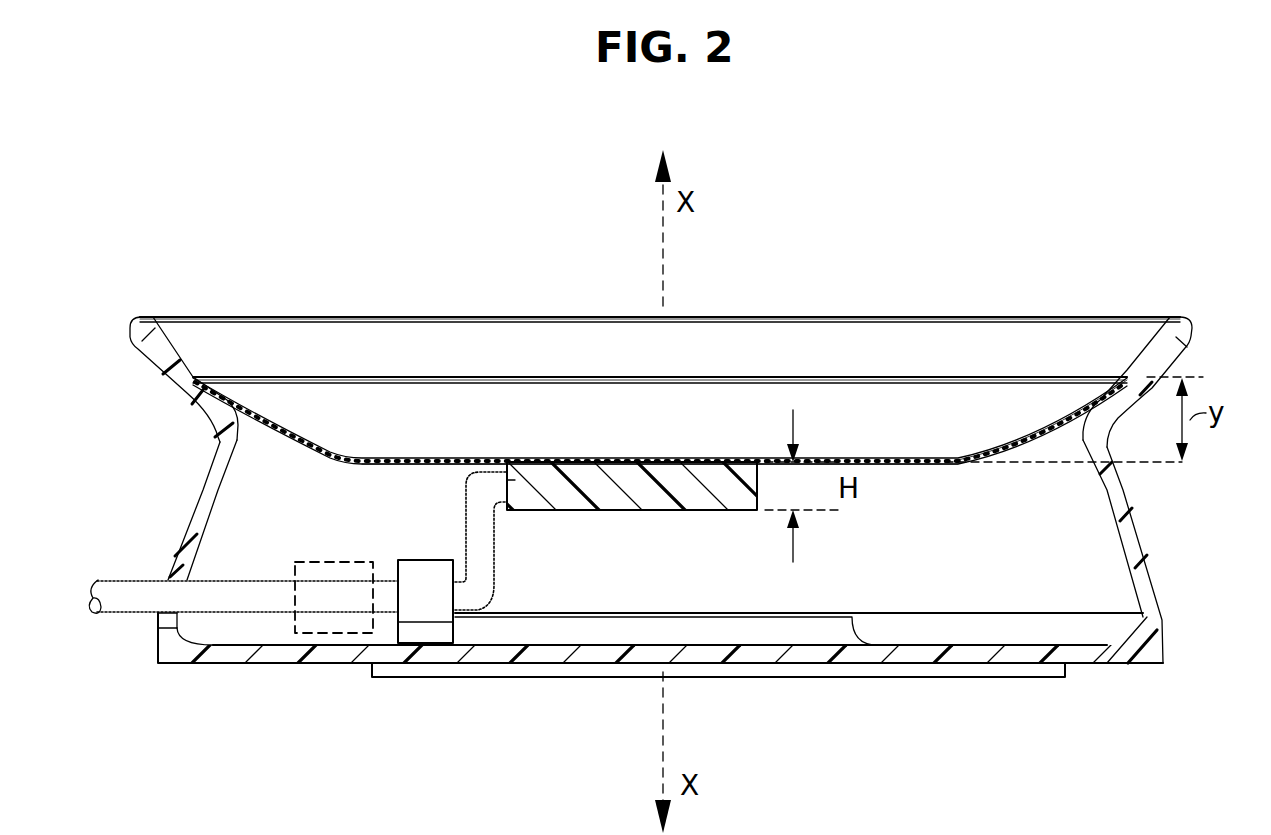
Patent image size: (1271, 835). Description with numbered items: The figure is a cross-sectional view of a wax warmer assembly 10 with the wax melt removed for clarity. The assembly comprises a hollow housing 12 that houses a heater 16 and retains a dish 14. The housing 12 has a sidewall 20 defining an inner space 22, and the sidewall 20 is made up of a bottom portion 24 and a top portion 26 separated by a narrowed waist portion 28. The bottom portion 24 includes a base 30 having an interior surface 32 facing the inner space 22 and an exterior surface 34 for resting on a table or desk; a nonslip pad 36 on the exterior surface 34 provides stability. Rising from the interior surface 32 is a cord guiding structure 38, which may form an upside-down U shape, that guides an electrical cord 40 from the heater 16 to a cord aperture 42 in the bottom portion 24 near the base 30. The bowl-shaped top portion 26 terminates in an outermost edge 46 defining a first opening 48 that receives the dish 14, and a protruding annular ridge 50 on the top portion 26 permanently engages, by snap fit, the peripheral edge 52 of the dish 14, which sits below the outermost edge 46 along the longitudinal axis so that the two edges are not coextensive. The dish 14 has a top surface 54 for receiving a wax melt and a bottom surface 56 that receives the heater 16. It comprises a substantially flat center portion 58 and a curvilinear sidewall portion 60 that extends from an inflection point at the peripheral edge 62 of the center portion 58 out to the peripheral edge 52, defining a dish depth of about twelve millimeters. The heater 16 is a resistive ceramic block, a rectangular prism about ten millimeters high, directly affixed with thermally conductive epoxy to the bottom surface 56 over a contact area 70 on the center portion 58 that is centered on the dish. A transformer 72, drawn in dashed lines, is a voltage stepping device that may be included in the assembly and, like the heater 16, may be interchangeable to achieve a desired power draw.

The wax warmer assembly 10 is at (150, 183).
The housing 12 is at (1147, 558).
The dish 14 is at (907, 395).
The heater 16 is at (707, 480).
The sidewall 20 is at (1135, 505).
The inner space 22 is at (1097, 573).
The bottom portion 24 is at (180, 543).
The top portion 26 is at (140, 348).
The narrowed waist portion 28 is at (215, 430).
The base 30 is at (281, 665).
The interior surface 32 is at (1080, 637).
The exterior surface 34 is at (1147, 666).
The nonslip pad 36 is at (548, 678).
The cord guiding structure 38 is at (432, 632).
The electrical cord 40 is at (125, 608).
The cord aperture 42 is at (160, 619).
The outermost edge 46 is at (1175, 318).
The first opening 48 is at (1013, 322).
The protruding annular ridge 50 is at (228, 377).
The peripheral edge 52 is at (420, 382).
The top surface 54 is at (840, 383).
The bottom surface 56 is at (280, 437).
The center portion 58 is at (480, 465).
The sidewall portion 60 is at (1090, 402).
The peripheral edge of the center portion 62 is at (347, 463).
The contact area 70 is at (641, 462).
The transformer 72 is at (333, 636).